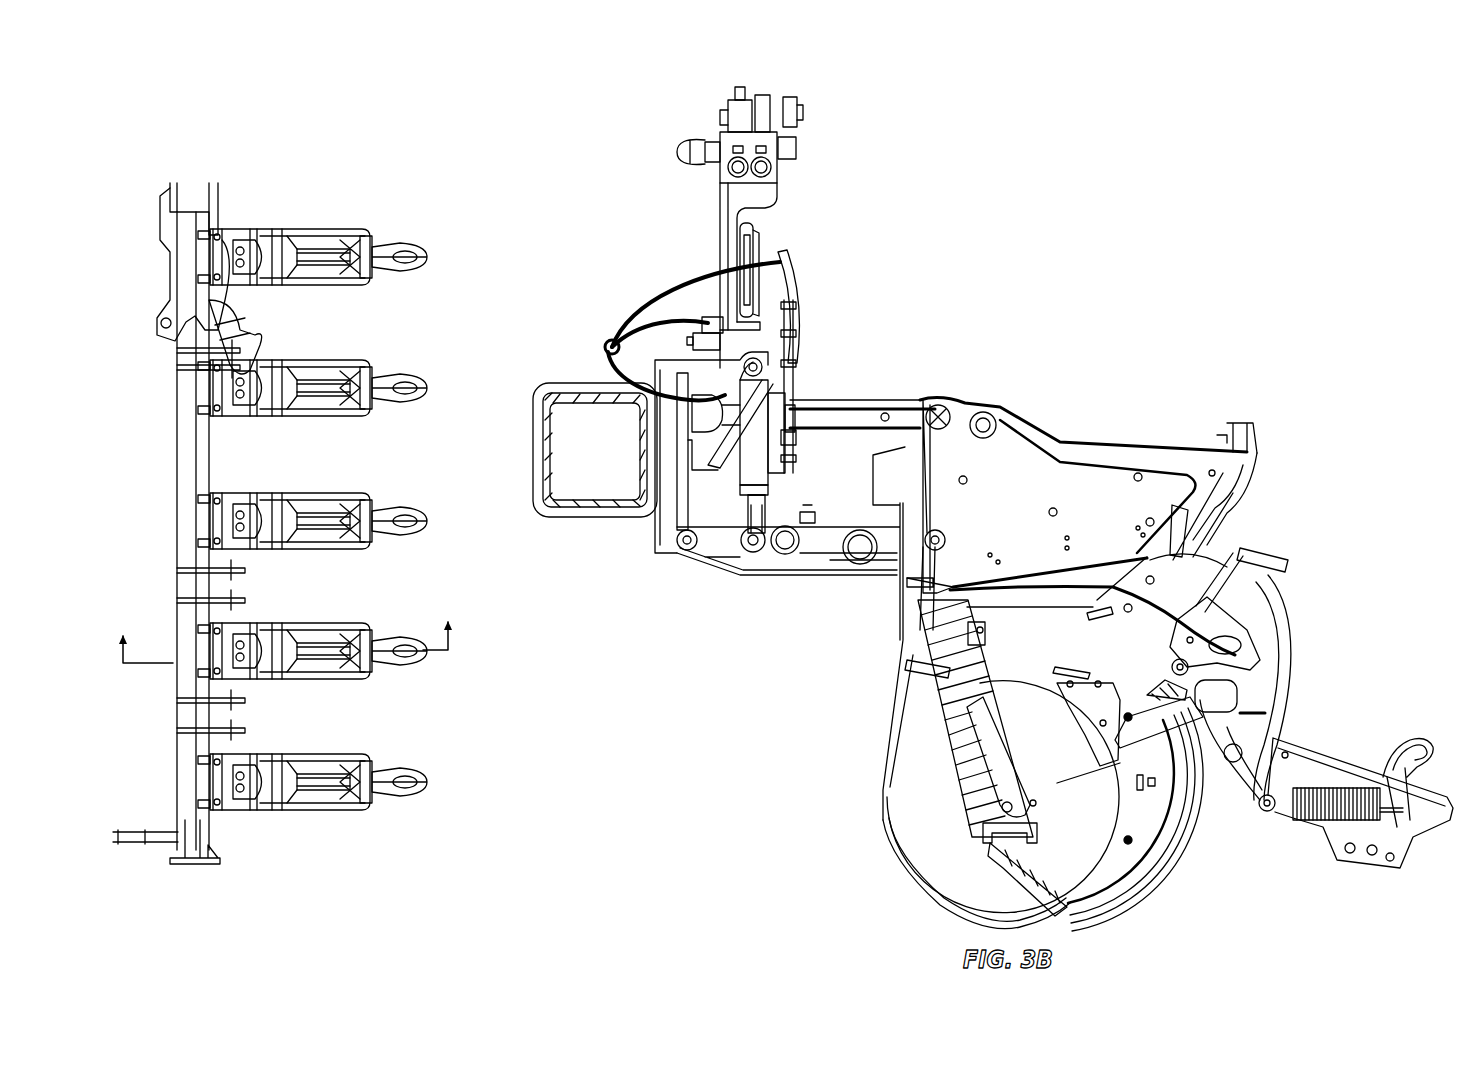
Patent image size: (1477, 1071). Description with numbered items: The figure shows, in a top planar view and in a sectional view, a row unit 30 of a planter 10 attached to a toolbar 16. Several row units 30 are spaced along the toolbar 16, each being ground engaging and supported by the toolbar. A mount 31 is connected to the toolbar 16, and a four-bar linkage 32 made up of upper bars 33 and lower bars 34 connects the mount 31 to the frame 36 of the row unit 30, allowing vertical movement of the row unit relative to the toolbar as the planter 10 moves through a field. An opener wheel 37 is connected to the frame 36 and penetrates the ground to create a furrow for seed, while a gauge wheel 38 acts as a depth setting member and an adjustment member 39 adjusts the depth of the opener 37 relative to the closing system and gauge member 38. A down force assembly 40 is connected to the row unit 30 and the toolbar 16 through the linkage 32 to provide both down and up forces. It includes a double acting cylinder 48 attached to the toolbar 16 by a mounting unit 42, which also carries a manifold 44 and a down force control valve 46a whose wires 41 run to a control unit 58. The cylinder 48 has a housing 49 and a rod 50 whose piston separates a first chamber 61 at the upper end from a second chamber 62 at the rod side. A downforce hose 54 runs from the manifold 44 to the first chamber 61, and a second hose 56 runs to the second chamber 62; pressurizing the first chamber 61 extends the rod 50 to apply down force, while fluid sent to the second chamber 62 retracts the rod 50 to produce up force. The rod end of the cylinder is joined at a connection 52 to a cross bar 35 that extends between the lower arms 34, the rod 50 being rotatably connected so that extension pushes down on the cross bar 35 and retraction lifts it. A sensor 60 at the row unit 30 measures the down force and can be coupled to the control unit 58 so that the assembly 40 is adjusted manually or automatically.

In FIG. 3A, the planter 10 is at (286, 556).
In FIG. 3A, the toolbar 16 is at (168, 177).
In FIG. 3B, the toolbar 16 is at (532, 412).
In FIG. 3A, the row unit 30 is at (344, 228).
In FIG. 3B, the row unit 30 is at (1000, 402).
In FIG. 3B, the mount 31 is at (665, 558).
In FIG. 3B, the linkage 32 is at (700, 570).
In FIG. 3B, the upper bars 33 is at (928, 400).
In FIG. 3B, the lower bars 34 is at (830, 570).
In FIG. 3B, the cross bar 35 is at (785, 558).
In FIG. 3B, the frame 36 is at (1100, 490).
In FIG. 3B, the opener wheel 37 is at (942, 910).
In FIG. 3B, the gauge wheel 38 is at (792, 440).
In FIG. 3B, the adjustment member 39 is at (1182, 352).
In FIG. 3B, the down force assembly 40 is at (658, 128).
In FIG. 3B, the wires 41 is at (706, 333).
In FIG. 3B, the mounting unit 42 is at (692, 341).
In FIG. 3B, the manifold 44 is at (735, 313).
In FIG. 3B, the down force control valve 46a is at (703, 320).
In FIG. 3B, the double acting cylinder 48 is at (752, 460).
In FIG. 3B, the housing portion 49 is at (797, 417).
In FIG. 3B, the rod 50 is at (754, 510).
In FIG. 3B, the connection 52 is at (753, 556).
In FIG. 3B, the downforce hose 54 is at (797, 348).
In FIG. 3B, the second hose 56 is at (791, 262).
In FIG. 3B, the control unit 58 is at (760, 230).
In FIG. 3B, the sensor 60 is at (1242, 630).
In FIG. 3B, the first chamber 61 is at (768, 374).
In FIG. 3B, the second chamber 62 is at (757, 472).